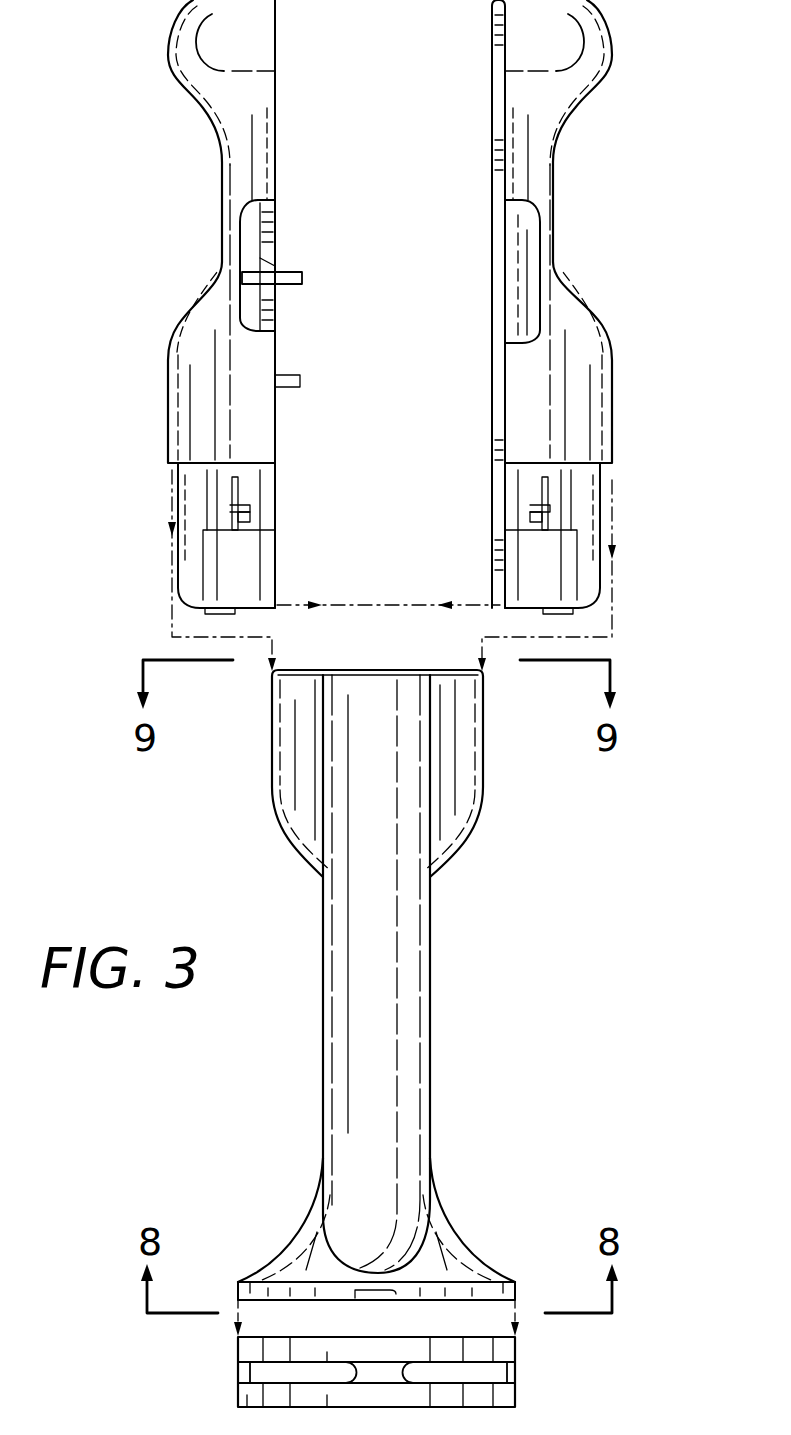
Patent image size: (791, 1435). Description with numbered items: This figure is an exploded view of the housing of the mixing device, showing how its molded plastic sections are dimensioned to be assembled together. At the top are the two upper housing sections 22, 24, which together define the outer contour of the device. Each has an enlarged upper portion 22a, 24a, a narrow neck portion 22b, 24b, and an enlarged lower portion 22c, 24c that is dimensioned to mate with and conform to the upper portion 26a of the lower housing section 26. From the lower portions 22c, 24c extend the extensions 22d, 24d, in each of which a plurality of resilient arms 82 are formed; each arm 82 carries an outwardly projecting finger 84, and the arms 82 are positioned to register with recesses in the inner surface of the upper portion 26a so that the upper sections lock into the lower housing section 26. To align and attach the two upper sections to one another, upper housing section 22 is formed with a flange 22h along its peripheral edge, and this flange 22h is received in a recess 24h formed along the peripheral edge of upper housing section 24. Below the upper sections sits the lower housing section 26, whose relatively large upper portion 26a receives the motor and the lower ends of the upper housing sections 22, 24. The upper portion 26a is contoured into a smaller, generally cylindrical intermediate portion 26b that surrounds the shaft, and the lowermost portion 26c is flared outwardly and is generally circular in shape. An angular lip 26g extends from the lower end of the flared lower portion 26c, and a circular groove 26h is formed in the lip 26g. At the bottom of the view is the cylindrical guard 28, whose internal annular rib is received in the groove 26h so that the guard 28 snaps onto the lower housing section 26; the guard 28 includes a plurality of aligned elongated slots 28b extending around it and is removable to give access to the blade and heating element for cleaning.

The upper housing section 22 is at (622, 337).
The enlarged upper portion 22a is at (580, 55).
The narrow neck portion 22b is at (535, 178).
The enlarged lower portion 22c is at (578, 400).
The extension 22d is at (575, 497).
The flange 22h is at (495, 137).
The upper housing section 24 is at (160, 337).
The enlarged upper portion 24a is at (200, 58).
The narrow neck portion 24b is at (238, 185).
The enlarged lower portion 24c is at (205, 410).
The extension 24d is at (210, 500).
The recess 24h is at (268, 298).
The lower housing section 26 is at (443, 957).
The upper portion 26a is at (463, 782).
The intermediate portion 26b is at (378, 1017).
The flared lower portion 26c is at (443, 1252).
The angular lip 26g is at (297, 1300).
The circular groove 26h is at (240, 1293).
The cylindrical guard 28 is at (525, 1343).
The base slot 28b is at (490, 1375).
The resilient arm 82 is at (245, 492).
The outwardly projecting finger 84 is at (248, 520).